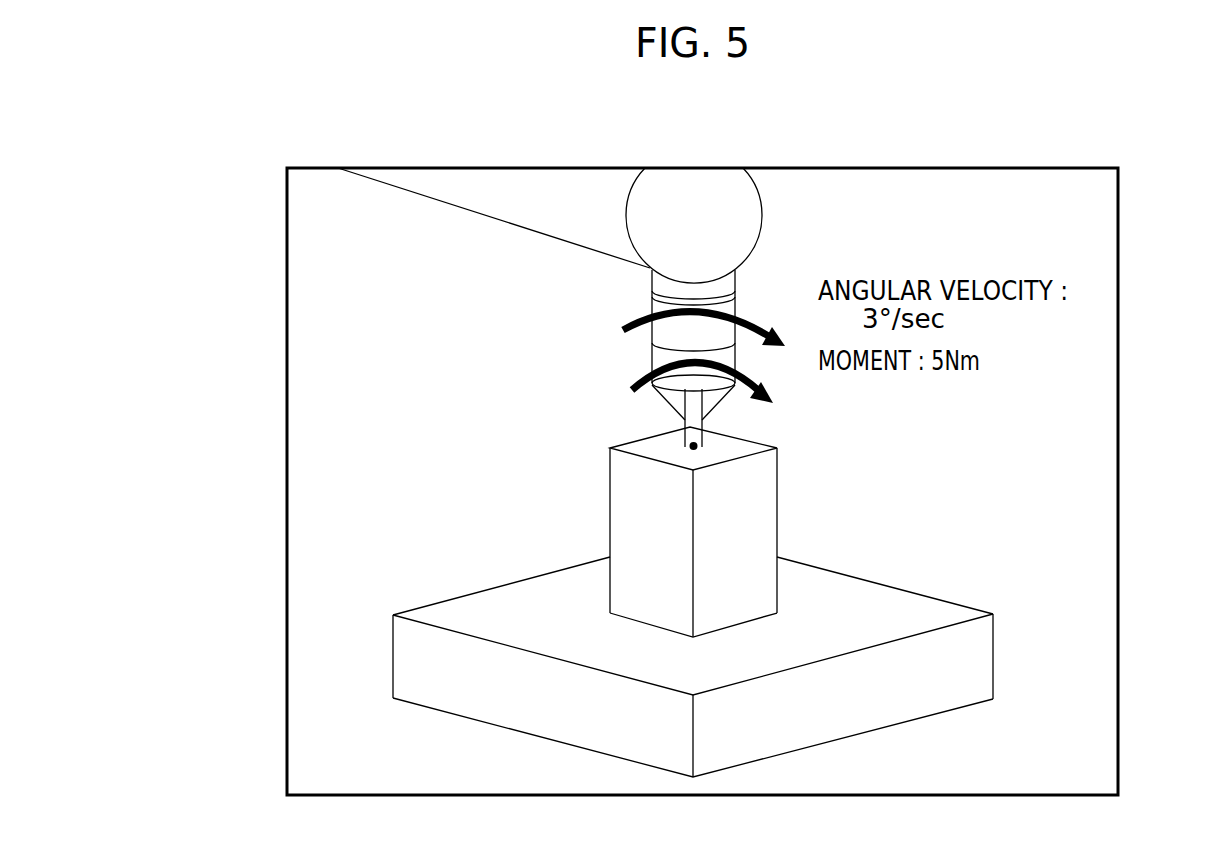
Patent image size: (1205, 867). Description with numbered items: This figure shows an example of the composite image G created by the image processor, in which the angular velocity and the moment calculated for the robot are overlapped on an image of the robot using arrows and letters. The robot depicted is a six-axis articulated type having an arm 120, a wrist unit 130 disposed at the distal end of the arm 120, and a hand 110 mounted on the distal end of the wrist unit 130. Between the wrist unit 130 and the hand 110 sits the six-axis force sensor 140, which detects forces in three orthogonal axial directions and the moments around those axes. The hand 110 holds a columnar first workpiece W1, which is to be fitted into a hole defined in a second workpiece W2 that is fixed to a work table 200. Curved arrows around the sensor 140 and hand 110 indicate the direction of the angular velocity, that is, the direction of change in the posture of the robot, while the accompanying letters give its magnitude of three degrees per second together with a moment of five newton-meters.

The composite image G is at (287, 440).
The arm 120 is at (463, 225).
The wrist unit 130 is at (747, 274).
The force sensor 140 is at (652, 337).
The hand 110 is at (667, 401).
The first workpiece W1 is at (697, 420).
The second workpiece W2 is at (763, 507).
The work table 200 is at (912, 697).